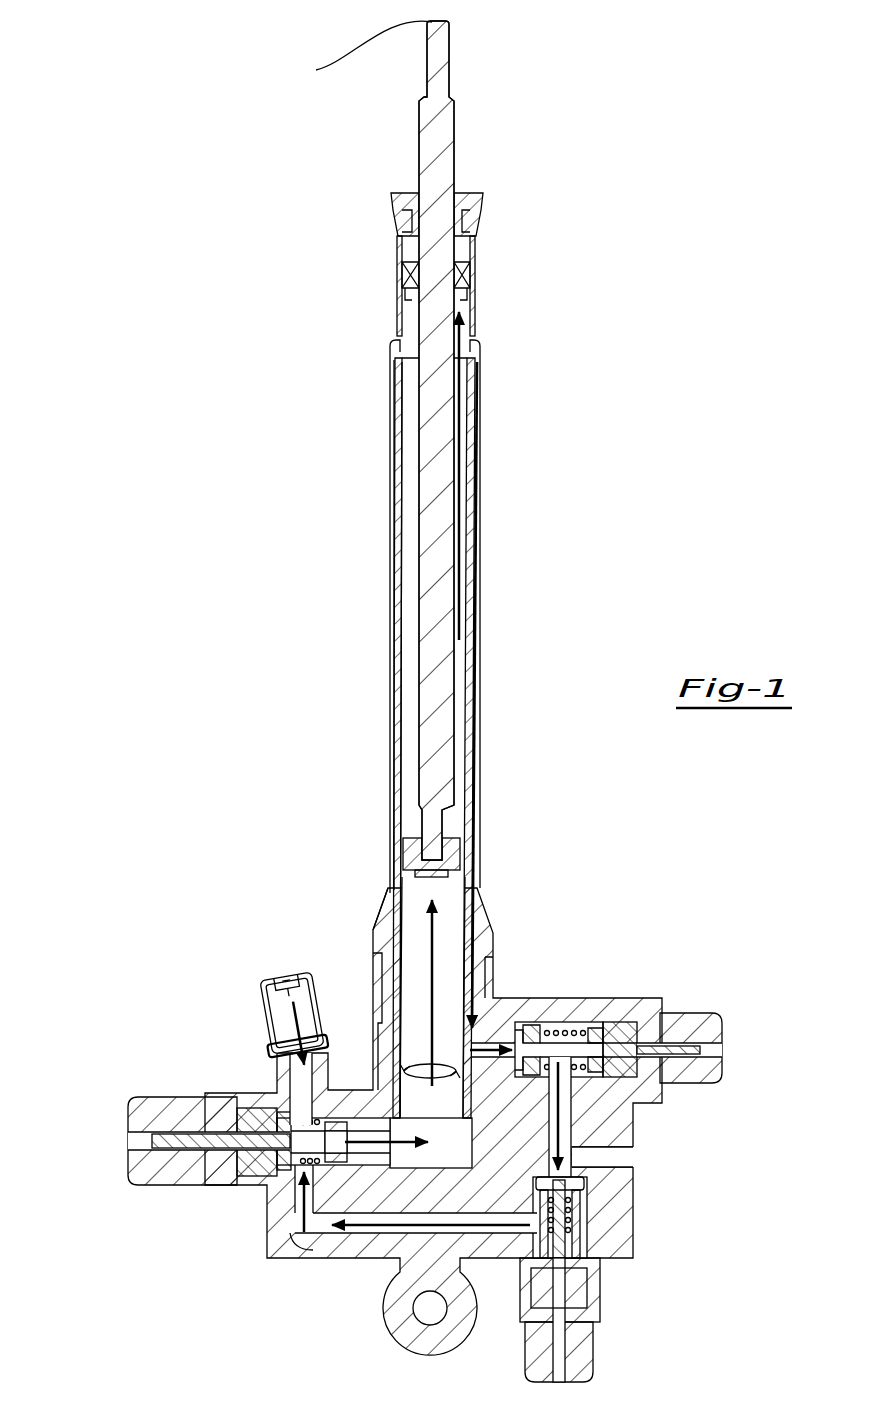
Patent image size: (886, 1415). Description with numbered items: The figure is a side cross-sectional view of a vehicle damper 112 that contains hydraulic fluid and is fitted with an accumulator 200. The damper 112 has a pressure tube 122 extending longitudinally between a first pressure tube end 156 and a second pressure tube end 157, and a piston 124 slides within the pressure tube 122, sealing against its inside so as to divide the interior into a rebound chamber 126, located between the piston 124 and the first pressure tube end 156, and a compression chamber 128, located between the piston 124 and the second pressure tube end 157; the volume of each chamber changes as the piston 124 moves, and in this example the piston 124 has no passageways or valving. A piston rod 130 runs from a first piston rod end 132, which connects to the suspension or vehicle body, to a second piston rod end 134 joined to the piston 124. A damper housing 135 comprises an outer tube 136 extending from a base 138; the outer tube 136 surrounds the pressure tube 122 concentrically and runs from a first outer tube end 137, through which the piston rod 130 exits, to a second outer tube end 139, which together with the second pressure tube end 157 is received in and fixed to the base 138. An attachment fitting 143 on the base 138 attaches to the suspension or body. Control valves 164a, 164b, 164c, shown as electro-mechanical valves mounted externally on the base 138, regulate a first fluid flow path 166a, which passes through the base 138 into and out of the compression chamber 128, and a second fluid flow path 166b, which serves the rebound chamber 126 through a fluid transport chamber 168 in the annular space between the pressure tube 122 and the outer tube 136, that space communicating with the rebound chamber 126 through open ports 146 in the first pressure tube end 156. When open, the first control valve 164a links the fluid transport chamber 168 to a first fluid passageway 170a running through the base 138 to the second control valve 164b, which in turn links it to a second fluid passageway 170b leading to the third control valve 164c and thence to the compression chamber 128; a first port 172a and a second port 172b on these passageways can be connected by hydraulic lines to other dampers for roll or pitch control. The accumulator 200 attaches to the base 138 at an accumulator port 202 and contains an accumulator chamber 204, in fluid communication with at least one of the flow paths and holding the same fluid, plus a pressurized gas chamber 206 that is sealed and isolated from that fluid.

The damper 112 is at (574, 299).
The pressure tube 122 is at (396, 568).
The piston 124 is at (460, 855).
The rebound chamber 126 is at (410, 452).
The compression chamber 128 is at (446, 940).
The piston rod 130 is at (456, 160).
The first piston rod end 132 is at (356, 53).
The second piston rod end 134 is at (420, 845).
The damper housing 135 is at (376, 908).
The outer tube 136 is at (390, 660).
The first outer tube end 137 is at (396, 232).
The base 138 is at (380, 972).
The second outer tube end 139 is at (487, 1035).
The attachment fitting 143 is at (398, 1318).
The open ports 146 is at (474, 358).
The first pressure tube end 156 is at (392, 345).
The second pressure tube end 157 is at (462, 1140).
The first control valve 164a is at (722, 1050).
The second control valve 164b is at (568, 1350).
The third control valve 164c is at (142, 1140).
The first fluid flow path 166a is at (303, 1197).
The second fluid flow path 166b is at (470, 913).
The fluid transport chamber 168 is at (480, 425).
The first fluid passageway 170a is at (567, 1115).
The second fluid passageway 170b is at (385, 1240).
The first port 172a is at (620, 1160).
The second port 172b is at (302, 1235).
The accumulator 200 is at (234, 1021).
The accumulator port 202 is at (288, 1082).
The accumulator chamber 204 is at (270, 1046).
The pressurized gas chamber 206 is at (292, 1000).